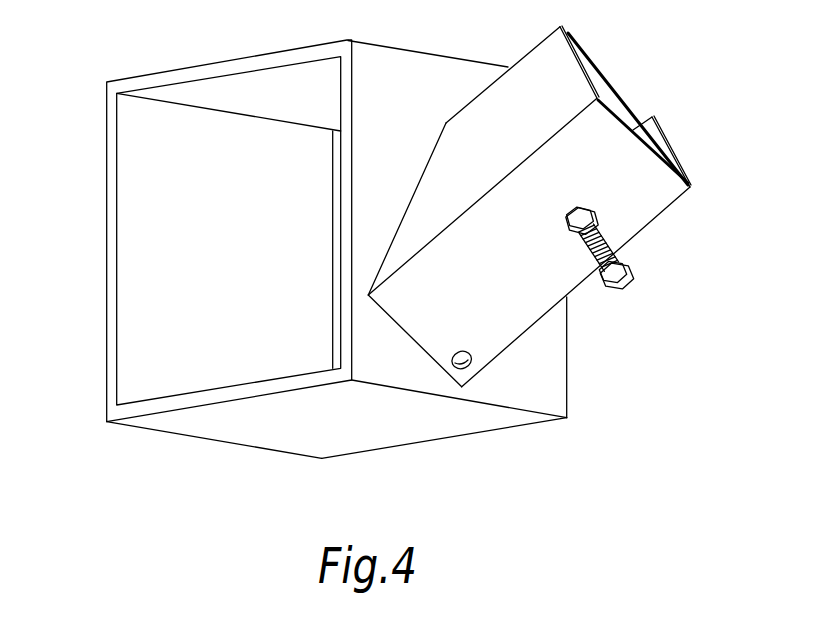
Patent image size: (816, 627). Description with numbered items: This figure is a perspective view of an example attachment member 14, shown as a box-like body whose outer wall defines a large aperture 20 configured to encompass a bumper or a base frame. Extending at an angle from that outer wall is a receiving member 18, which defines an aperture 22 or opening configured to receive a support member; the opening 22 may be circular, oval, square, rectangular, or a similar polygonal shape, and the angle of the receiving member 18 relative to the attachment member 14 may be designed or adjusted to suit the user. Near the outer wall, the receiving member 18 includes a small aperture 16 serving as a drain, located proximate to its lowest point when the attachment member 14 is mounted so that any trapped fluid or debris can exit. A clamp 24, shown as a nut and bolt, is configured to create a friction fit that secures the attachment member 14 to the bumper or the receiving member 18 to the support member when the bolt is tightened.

The attachment member 14 is at (550, 348).
The aperture 16 is at (463, 366).
The receiving member 18 is at (655, 197).
The aperture 20 is at (137, 235).
The aperture 22 is at (637, 80).
The clamp 24 is at (648, 250).